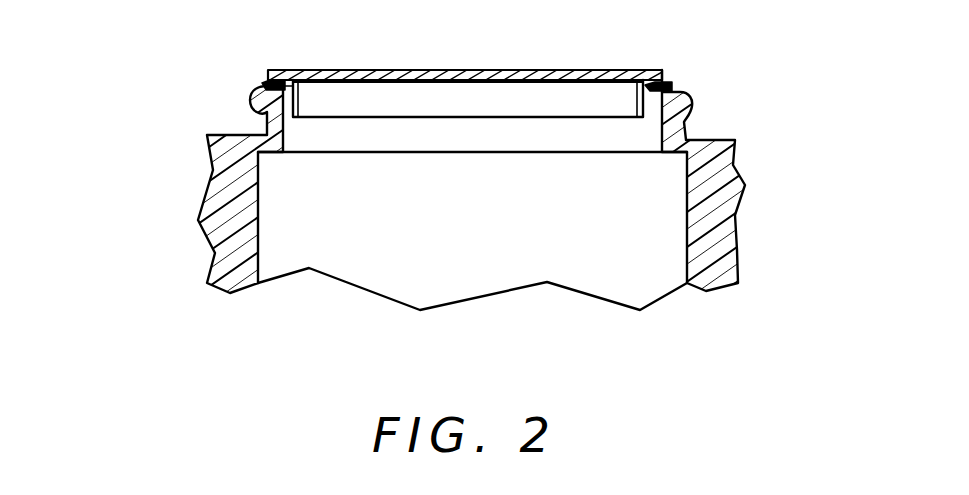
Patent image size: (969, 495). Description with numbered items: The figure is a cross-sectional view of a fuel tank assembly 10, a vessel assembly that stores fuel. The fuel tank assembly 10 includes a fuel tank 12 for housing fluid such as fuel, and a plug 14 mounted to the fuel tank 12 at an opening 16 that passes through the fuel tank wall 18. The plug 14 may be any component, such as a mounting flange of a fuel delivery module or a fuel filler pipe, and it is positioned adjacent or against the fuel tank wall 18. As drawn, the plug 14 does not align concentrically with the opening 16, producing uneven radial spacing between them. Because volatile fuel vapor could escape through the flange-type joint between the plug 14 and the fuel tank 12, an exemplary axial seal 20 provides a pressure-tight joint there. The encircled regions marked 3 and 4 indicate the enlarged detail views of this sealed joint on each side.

The fuel tank assembly 10 is at (180, 318).
The fuel tank 12 is at (735, 140).
The plug 14 is at (483, 72).
The opening 16 is at (632, 118).
The fuel tank wall 18 is at (682, 136).
The axial seal 20 is at (256, 71).
The detail view 3 indicator 3 is at (306, 42).
The detail view 4 indicator 4 is at (683, 35).